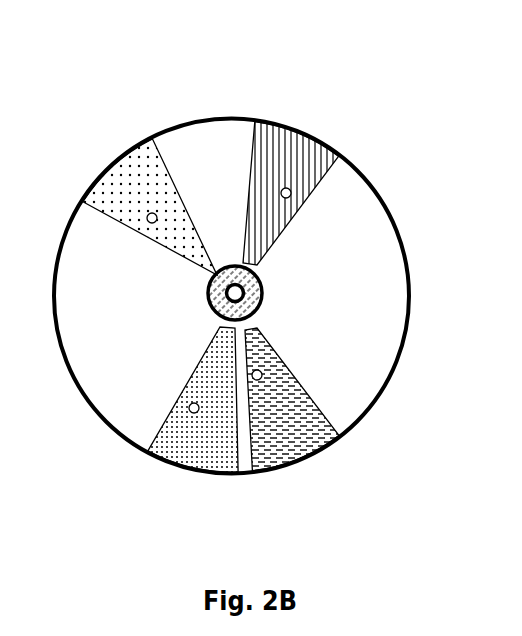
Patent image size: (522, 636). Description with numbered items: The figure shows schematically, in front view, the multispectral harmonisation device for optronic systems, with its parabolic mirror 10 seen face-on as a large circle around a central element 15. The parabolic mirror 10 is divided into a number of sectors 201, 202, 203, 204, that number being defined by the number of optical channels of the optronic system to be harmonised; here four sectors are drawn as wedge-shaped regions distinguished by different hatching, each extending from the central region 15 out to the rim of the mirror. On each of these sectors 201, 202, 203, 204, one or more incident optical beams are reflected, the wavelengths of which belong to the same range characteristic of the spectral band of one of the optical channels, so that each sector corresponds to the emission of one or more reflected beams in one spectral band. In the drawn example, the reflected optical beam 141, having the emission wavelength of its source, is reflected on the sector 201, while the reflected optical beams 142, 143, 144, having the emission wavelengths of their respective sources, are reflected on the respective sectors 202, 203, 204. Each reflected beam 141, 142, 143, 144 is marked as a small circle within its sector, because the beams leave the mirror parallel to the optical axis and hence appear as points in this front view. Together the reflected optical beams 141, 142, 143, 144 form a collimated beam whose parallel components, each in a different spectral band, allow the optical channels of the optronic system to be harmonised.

The parabolic mirror 10 is at (62, 240).
The central hub 15 is at (207, 283).
The reflected optical beam 141 is at (260, 371).
The reflected optical beam 142 is at (191, 404).
The reflected optical beam 143 is at (150, 223).
The reflected optical beam 144 is at (291, 195).
The sector 201 is at (299, 442).
The sector 202 is at (197, 455).
The sector 203 is at (108, 200).
The sector 204 is at (276, 128).